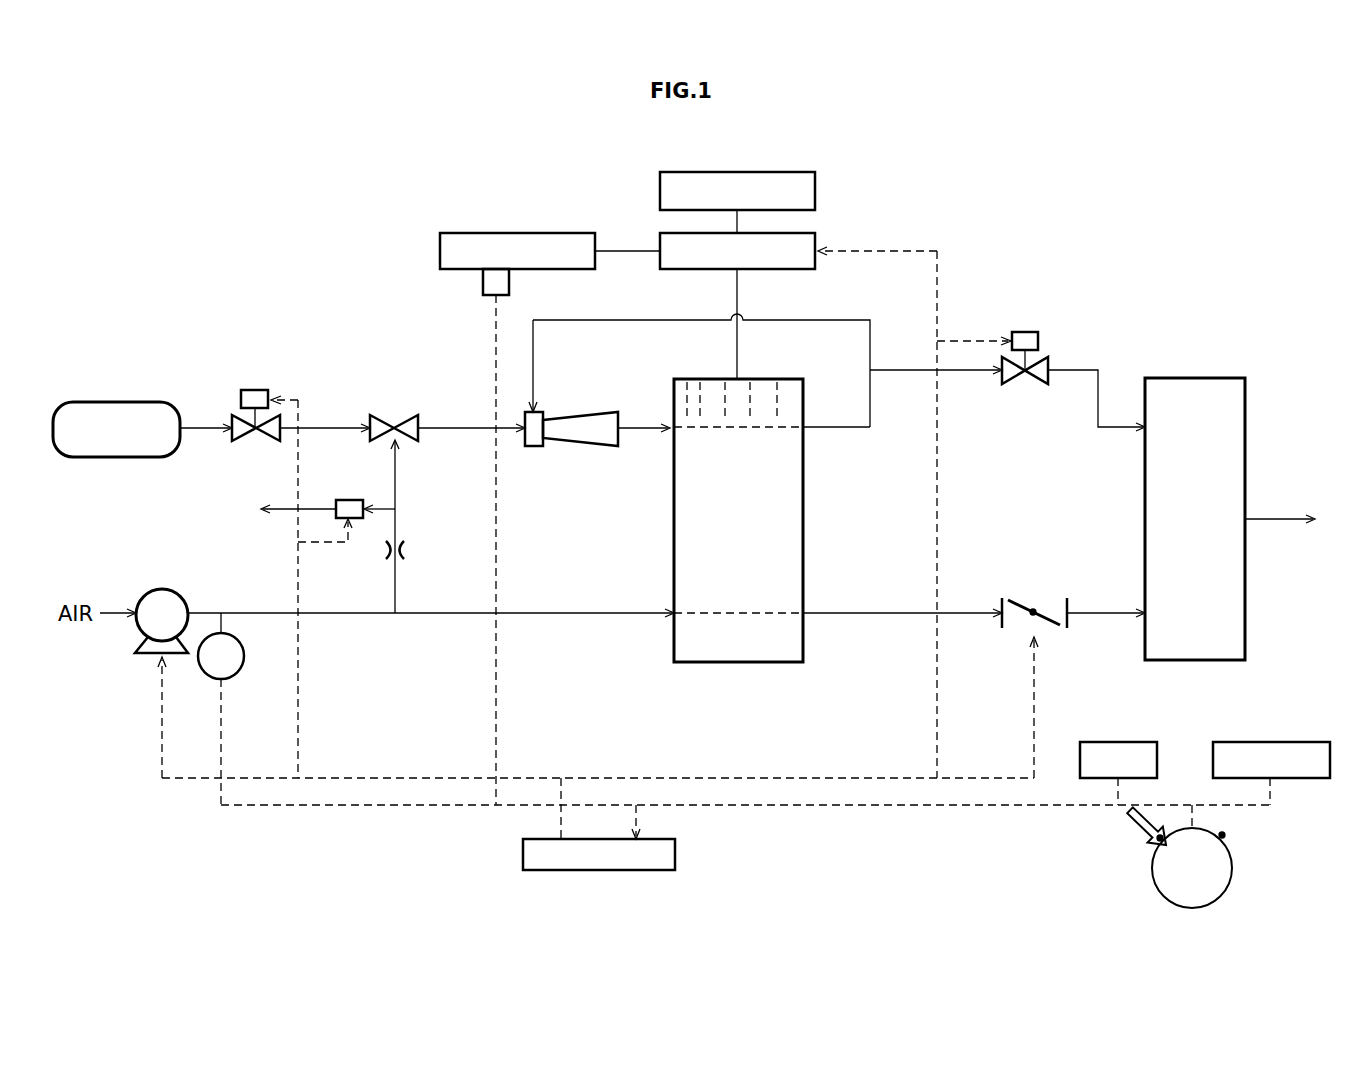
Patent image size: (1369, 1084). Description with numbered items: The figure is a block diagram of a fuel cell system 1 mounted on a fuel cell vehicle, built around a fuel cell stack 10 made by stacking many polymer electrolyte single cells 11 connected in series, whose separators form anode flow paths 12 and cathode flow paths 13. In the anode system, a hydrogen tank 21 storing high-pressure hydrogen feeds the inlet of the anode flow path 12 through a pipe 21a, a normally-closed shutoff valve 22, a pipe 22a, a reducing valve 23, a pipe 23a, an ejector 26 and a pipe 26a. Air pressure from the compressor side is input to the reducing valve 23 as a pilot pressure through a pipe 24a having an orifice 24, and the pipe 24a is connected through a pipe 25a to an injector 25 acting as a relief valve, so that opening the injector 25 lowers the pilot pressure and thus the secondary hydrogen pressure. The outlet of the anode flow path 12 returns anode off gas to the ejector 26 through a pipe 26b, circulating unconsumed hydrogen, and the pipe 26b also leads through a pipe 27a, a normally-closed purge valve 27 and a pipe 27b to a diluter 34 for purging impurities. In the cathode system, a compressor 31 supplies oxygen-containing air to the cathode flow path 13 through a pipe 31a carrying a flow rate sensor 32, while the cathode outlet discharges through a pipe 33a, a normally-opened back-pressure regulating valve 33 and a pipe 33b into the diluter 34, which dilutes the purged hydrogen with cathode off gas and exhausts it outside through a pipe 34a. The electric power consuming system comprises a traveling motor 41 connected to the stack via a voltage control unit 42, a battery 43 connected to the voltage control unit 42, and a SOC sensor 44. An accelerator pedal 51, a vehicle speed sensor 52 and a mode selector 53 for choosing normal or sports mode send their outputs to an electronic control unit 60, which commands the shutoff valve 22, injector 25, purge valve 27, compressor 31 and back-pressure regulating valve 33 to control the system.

The fuel cell system 1 is at (1042, 153).
The fuel cell stack 10 is at (814, 386).
The single cells 11 is at (710, 382).
The anode flow paths 12 is at (738, 432).
The cathode flow paths 13 is at (739, 610).
The hydrogen tank 21 is at (128, 402).
The pipe 21a is at (202, 432).
The shutoff valve 22 is at (255, 390).
The pipe 22a is at (320, 426).
The reducing valve 23 is at (388, 412).
The pipe 23a is at (450, 426).
The orifice 24 is at (407, 551).
The pipe 24a is at (400, 474).
The injector 25 is at (349, 500).
The pipe 25a is at (383, 514).
The ejector 26 is at (592, 412).
The pipe 26a is at (644, 426).
The pipe 26b is at (834, 430).
The purge valve 27 is at (1038, 341).
The pipe 27a is at (966, 372).
The pipe 27b is at (1098, 398).
The compressor 31 is at (160, 600).
The pipe 31a is at (252, 611).
The flow rate sensor 32 is at (242, 672).
The back-pressure regulating valve 33 is at (1040, 600).
The pipe 33a is at (845, 616).
The pipe 33b is at (1093, 616).
The diluter 34 is at (1196, 378).
The pipe 34a is at (1268, 522).
The traveling motor 41 is at (815, 182).
The voltage control unit 42 is at (815, 243).
The battery 43 is at (440, 251).
The SOC sensor 44 is at (483, 285).
The accelerator pedal 51 is at (1141, 742).
The vehicle speed sensor 52 is at (1273, 742).
The mode selector 53 is at (1222, 893).
The electronic control unit 60 is at (675, 855).